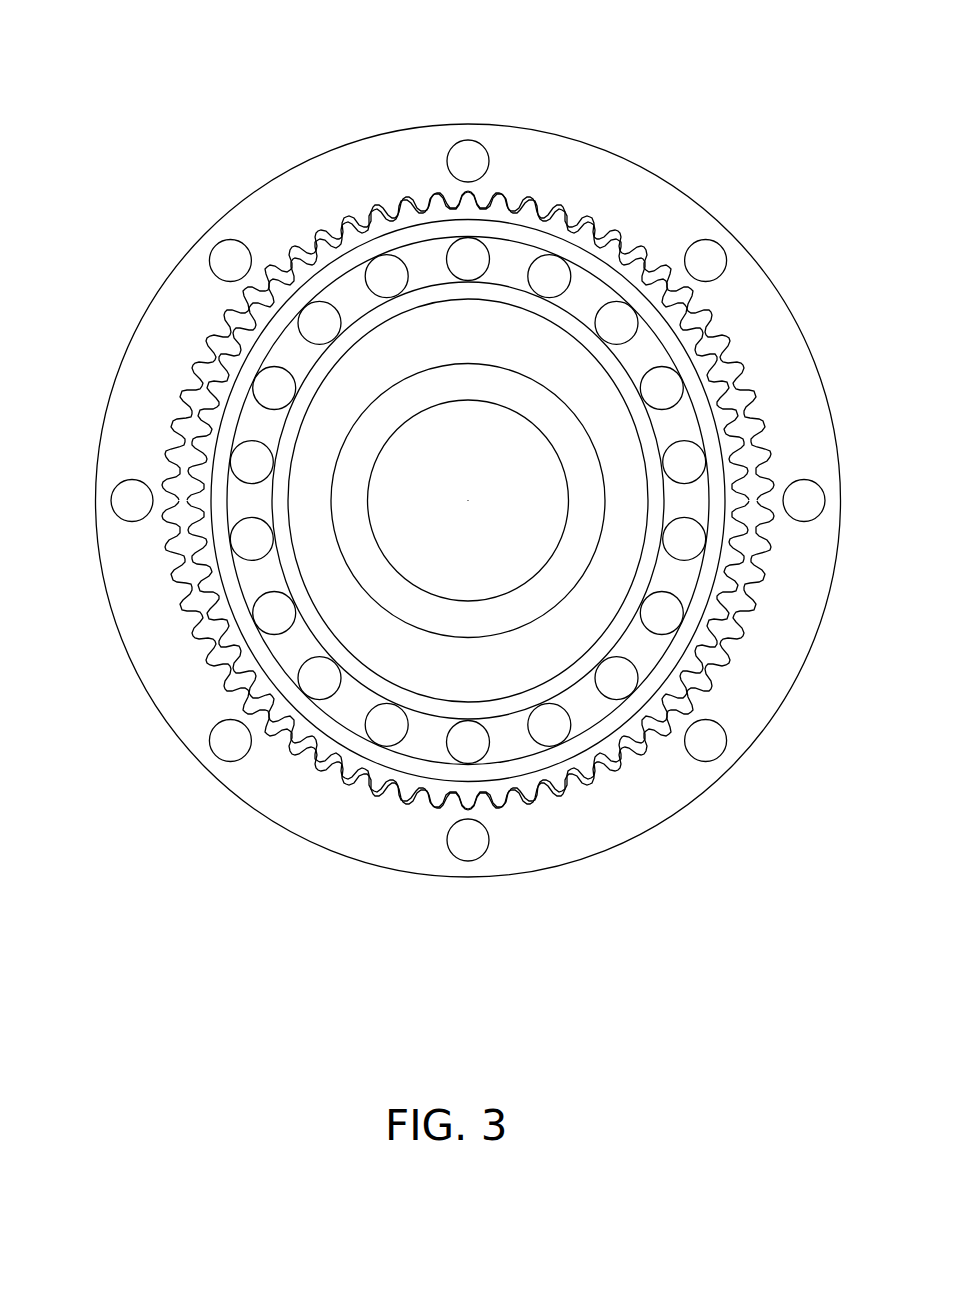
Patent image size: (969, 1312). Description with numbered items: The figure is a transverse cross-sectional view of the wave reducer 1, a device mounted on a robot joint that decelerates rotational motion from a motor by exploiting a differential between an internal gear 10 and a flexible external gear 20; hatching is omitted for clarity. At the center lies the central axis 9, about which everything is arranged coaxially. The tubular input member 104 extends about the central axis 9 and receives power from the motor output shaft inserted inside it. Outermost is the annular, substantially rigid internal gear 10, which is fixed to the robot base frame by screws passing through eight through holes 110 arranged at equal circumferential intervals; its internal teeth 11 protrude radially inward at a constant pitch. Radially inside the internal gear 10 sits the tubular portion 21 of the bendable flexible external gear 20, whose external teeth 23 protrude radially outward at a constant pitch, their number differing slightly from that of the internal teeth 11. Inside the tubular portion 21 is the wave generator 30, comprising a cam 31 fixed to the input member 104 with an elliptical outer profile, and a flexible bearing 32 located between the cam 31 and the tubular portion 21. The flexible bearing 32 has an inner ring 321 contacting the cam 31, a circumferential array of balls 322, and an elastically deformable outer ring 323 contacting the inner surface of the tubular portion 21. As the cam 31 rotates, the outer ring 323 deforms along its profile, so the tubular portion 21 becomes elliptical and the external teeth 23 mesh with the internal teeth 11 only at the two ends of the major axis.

The wave reducer 1 is at (500, 114).
The internal gear 10 is at (623, 195).
The internal teeth 11 is at (742, 412).
The through hole 110 is at (712, 744).
The flexible external gear 20 is at (200, 575).
The tubular portion 21 is at (368, 227).
The external teeth 23 is at (207, 413).
The wave generator 30 is at (555, 1018).
The cam 31 is at (407, 672).
The flexible bearing 32 is at (632, 973).
The inner ring 321 is at (483, 710).
The balls 322 is at (542, 733).
The outer ring 323 is at (563, 748).
The input member 104 is at (393, 402).
The central axis 9 is at (471, 502).